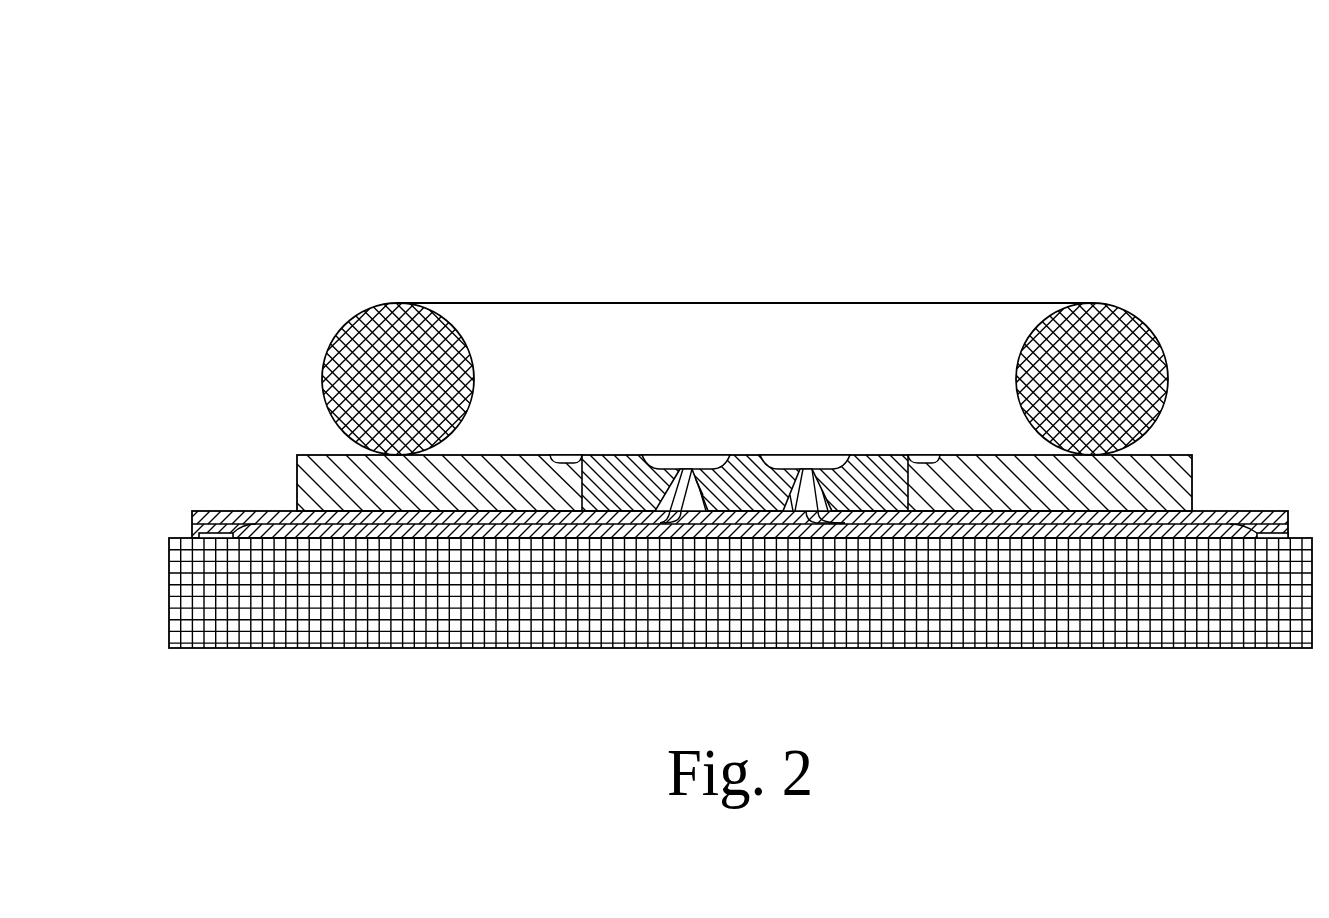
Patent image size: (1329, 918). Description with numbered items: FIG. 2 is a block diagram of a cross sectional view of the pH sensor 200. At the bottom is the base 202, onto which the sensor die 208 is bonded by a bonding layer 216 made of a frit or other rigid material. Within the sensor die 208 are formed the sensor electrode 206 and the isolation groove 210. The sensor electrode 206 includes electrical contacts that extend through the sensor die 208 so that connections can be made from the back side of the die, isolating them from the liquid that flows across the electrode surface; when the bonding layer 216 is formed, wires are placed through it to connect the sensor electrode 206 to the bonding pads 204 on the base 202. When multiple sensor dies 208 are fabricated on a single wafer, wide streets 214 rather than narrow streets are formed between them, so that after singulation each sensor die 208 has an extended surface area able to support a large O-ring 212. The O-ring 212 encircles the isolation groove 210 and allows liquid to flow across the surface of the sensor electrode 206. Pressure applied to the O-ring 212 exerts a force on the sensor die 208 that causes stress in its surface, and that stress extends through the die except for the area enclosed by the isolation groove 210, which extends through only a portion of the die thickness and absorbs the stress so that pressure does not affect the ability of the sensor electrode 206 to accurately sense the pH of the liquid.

The pH sensor 200 is at (1132, 147).
The base 202 is at (322, 648).
The bonding pads 204 is at (212, 537).
The sensor electrode 206 is at (807, 455).
The sensor die 208 is at (297, 470).
The isolation groove 210 is at (590, 455).
The O-ring 212 is at (747, 303).
The wide streets 214 is at (548, 270).
The bonding layer 216 is at (192, 520).